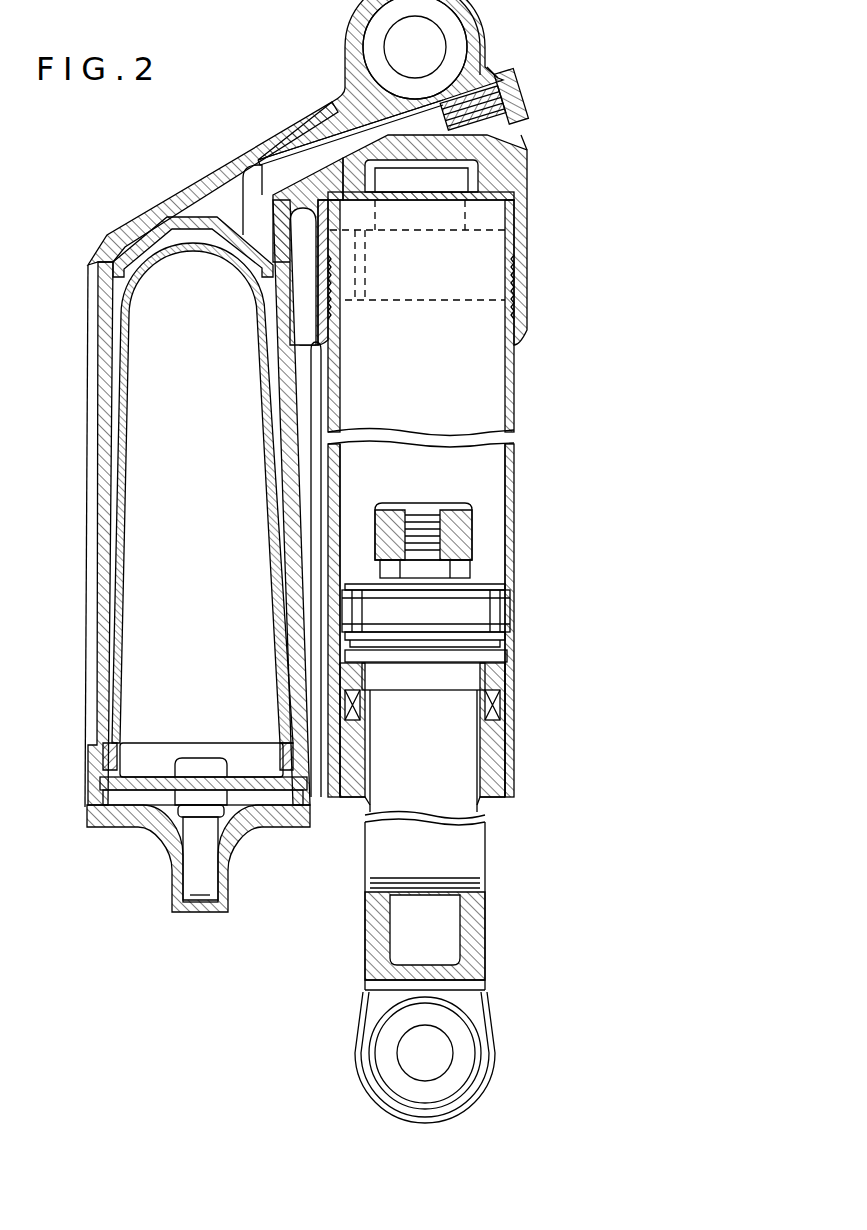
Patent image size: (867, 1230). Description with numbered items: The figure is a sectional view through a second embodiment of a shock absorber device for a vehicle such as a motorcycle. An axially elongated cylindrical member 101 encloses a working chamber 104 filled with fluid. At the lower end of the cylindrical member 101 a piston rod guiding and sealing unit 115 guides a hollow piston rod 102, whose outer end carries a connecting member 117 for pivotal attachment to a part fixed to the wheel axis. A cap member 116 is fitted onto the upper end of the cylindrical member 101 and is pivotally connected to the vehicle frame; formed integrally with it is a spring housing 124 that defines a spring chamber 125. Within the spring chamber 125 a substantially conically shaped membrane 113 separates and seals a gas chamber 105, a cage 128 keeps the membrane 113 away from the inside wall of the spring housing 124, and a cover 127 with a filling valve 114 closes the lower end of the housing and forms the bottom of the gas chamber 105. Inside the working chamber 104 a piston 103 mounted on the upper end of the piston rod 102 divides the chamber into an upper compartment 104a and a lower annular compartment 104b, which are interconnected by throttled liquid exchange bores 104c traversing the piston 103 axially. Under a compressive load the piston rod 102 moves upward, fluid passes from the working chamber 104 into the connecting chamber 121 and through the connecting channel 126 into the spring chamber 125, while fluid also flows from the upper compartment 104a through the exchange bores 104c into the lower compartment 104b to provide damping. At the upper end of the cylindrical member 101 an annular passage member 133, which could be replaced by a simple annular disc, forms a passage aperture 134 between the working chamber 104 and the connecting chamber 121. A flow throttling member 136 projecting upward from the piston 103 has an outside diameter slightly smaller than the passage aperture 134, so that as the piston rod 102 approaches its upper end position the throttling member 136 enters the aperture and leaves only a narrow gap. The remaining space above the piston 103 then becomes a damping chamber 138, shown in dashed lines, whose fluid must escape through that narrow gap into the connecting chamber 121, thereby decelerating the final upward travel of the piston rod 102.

The cylindrical member 101 is at (515, 460).
The piston rod 102 is at (487, 845).
The piston 103 is at (490, 612).
The working chamber 104 is at (470, 397).
The upper compartment 104a is at (485, 320).
The lower annular compartment 104b is at (345, 652).
The throttled liquid exchange bores 104c is at (345, 600).
The gas chamber 105 is at (145, 512).
The membrane 113 is at (122, 352).
The filling valve 114 is at (198, 867).
The piston rod guiding and sealing unit 115 is at (505, 725).
The cap member 116 is at (500, 148).
The connecting member 117 is at (472, 1000).
The connecting chamber 121 is at (430, 143).
The spring housing 124 is at (183, 203).
The spring chamber 125 is at (240, 193).
The connecting channel 126 is at (313, 157).
The cover 127 is at (143, 783).
The cage 128 is at (258, 345).
The passage member 133 is at (505, 180).
The passage aperture 134 is at (378, 180).
The throttling member 136 is at (473, 535).
The damping chamber 138 is at (483, 213).